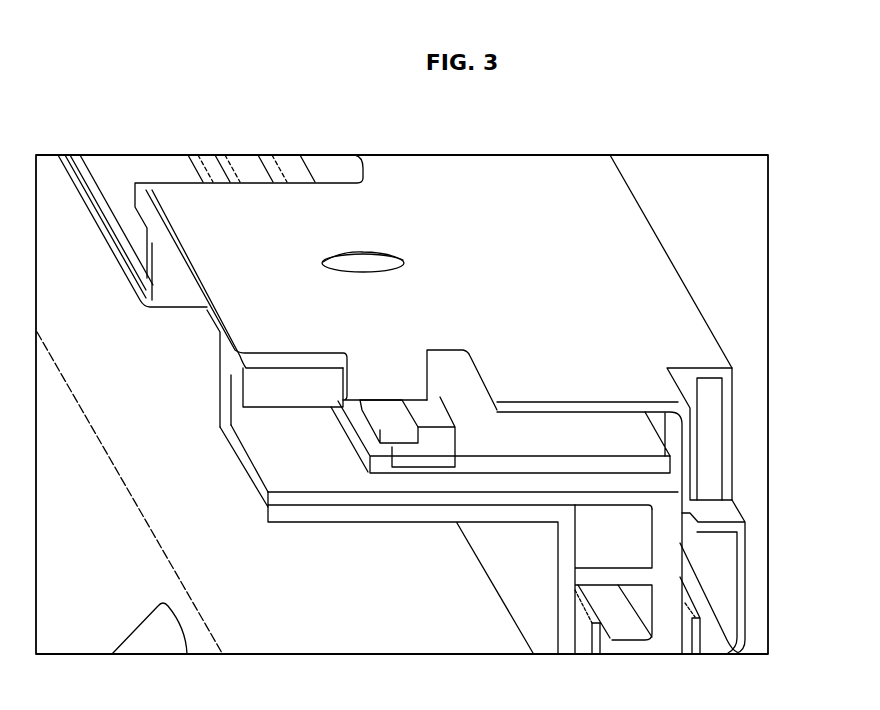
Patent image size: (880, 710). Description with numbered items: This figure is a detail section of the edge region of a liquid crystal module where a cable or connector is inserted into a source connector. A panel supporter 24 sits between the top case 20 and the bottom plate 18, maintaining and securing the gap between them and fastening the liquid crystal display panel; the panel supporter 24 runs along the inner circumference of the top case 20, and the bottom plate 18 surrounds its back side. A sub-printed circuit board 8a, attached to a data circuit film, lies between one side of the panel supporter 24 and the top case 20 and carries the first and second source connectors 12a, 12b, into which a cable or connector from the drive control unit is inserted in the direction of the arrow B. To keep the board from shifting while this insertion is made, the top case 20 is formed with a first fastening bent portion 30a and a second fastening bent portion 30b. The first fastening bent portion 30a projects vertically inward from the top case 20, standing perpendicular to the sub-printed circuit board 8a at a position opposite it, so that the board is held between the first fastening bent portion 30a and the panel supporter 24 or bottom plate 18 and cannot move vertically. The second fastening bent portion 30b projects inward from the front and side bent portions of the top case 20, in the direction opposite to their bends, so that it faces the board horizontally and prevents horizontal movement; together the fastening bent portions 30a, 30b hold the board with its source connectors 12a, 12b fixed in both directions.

The top case 20 is at (441, 157).
The first source connector 12a is at (245, 162).
The second source connector 12b is at (430, 418).
The sub-printed circuit board 8a is at (330, 162).
The first fastening bent portion 30a is at (381, 372).
The second fastening bent portion 30b is at (687, 442).
The bottom plate 18 is at (455, 643).
The panel supporter 24 is at (665, 643).
The arrow B is at (272, 448).